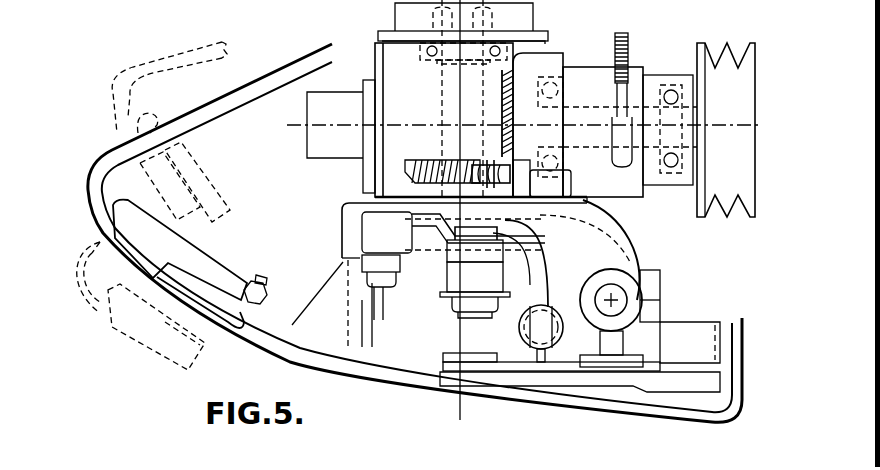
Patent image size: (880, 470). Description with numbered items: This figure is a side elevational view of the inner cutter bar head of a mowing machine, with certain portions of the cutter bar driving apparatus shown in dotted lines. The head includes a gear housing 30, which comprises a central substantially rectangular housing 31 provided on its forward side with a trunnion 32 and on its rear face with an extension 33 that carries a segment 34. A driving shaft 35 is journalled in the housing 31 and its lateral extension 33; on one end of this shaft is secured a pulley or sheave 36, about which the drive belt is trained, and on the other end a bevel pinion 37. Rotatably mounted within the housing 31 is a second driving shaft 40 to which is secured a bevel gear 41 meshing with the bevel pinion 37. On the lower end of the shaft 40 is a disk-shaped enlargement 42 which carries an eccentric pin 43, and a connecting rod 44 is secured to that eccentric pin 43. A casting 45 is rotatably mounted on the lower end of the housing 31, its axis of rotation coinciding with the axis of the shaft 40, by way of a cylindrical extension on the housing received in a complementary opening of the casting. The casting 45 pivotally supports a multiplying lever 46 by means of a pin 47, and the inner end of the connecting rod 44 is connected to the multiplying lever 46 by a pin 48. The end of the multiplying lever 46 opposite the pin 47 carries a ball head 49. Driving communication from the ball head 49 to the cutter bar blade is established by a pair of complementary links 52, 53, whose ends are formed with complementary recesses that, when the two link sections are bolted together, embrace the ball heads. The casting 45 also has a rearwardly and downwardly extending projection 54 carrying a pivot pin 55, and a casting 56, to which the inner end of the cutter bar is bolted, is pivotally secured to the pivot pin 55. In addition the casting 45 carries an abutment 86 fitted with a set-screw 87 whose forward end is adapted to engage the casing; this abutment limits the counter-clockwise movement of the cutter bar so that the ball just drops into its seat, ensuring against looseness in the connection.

The gear housing 30 is at (378, 62).
The central substantially rectangular housing 31 is at (392, 163).
The trunnion 32 is at (317, 156).
The extension 33 is at (625, 181).
The segment 34 is at (628, 46).
The driving shaft 35 is at (583, 110).
The pulley or sheave 36 is at (727, 43).
The bevel pinion 37 is at (523, 80).
The driving shaft 40 is at (455, 90).
The bevel gear 41 is at (421, 166).
The disk-shaped enlargement 42 is at (410, 224).
The eccentric pin 43 is at (486, 278).
The connecting rod 44 is at (452, 291).
The casting 45 is at (342, 233).
The multiplying lever 46 is at (409, 239).
The pin 47 is at (384, 291).
The pin 48 is at (537, 228).
The ball head 49 is at (553, 314).
The link 52 is at (567, 326).
The link 53 is at (521, 330).
The projection 54 is at (612, 253).
The pivot pin 55 is at (668, 272).
The casting 56 is at (680, 338).
The abutment 86 is at (505, 162).
The set-screw 87 is at (484, 165).